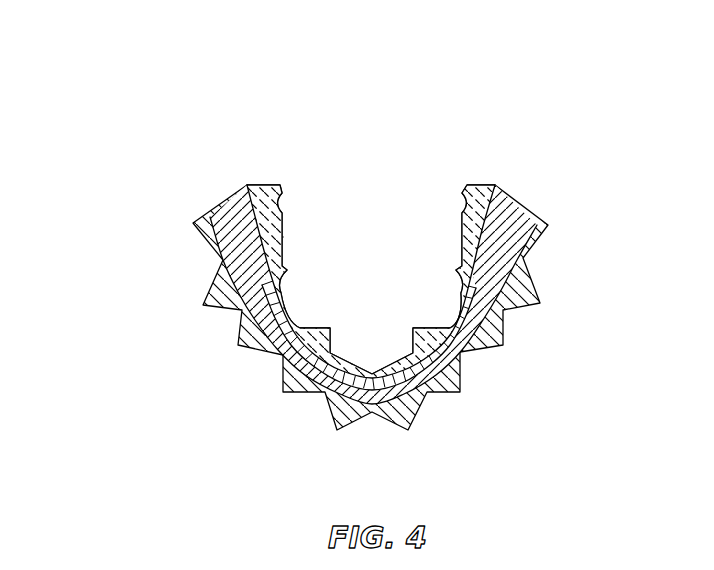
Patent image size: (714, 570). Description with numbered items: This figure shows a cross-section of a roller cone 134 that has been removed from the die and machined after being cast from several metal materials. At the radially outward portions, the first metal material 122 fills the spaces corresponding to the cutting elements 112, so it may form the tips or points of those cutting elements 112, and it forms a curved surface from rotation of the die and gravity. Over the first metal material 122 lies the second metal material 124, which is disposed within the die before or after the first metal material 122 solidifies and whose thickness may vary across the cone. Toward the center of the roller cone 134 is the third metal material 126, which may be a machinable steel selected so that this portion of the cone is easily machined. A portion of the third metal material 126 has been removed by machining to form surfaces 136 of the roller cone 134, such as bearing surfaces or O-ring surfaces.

The cutting elements 112 is at (505, 333).
The first metal material 122 is at (530, 283).
The second metal material 124 is at (518, 197).
The third metal material 126 is at (477, 193).
The roller cone 134 is at (165, 138).
The surfaces 136 is at (318, 320).